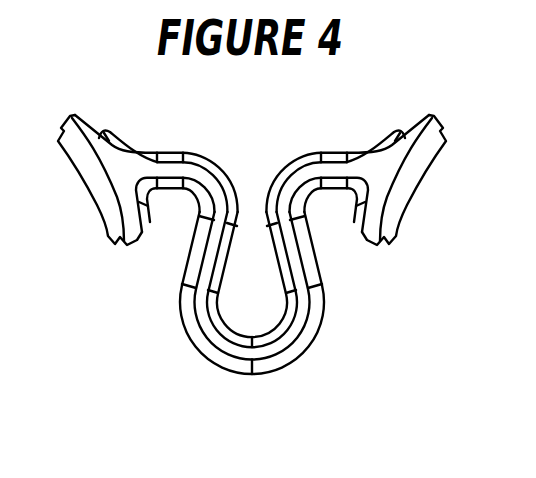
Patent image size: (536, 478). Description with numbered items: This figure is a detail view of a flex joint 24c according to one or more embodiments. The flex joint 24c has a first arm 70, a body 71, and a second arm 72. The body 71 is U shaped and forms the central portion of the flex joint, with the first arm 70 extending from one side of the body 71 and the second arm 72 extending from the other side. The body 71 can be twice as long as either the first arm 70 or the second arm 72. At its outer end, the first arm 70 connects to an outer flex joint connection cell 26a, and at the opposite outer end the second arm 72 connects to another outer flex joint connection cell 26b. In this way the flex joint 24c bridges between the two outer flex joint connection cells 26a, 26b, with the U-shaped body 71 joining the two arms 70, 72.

The flex joint 24c is at (206, 400).
The outer flex joint connection cell 26a is at (96, 107).
The outer flex joint connection cell 26b is at (422, 117).
The first arm 70 is at (171, 152).
The body 71 is at (273, 371).
The second arm 72 is at (327, 152).